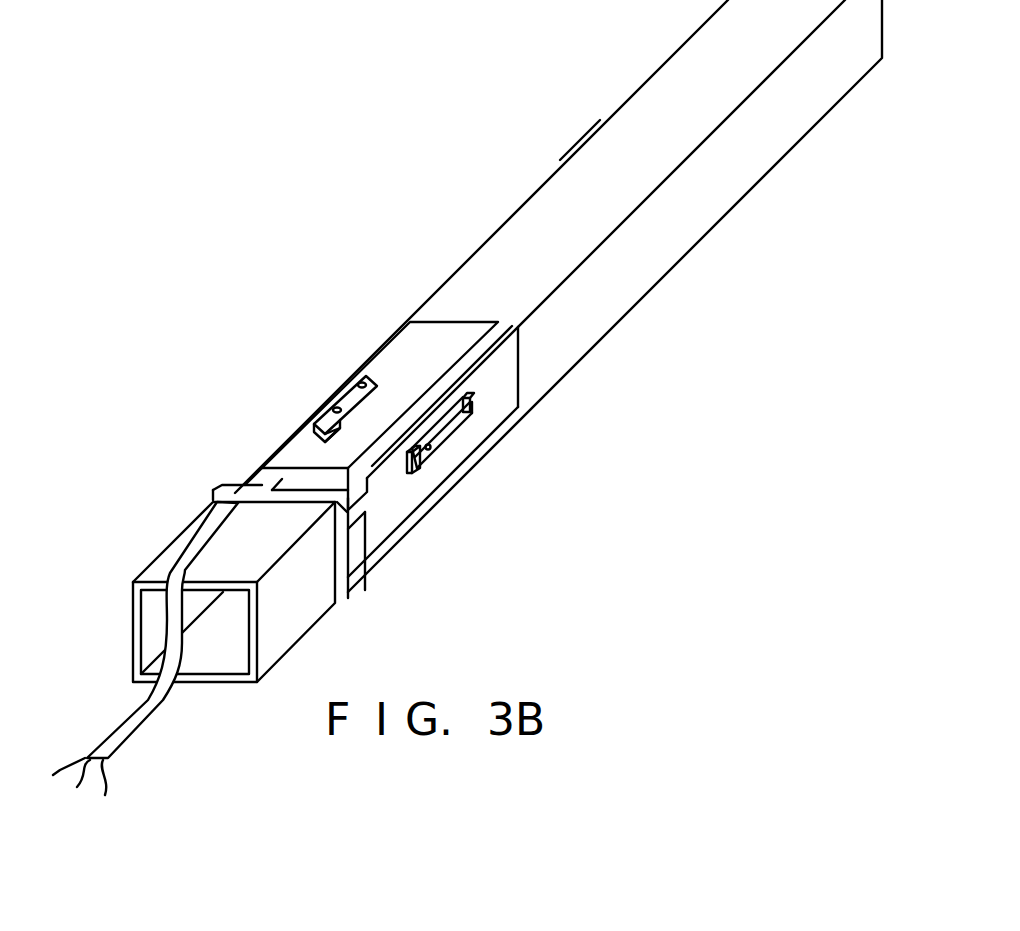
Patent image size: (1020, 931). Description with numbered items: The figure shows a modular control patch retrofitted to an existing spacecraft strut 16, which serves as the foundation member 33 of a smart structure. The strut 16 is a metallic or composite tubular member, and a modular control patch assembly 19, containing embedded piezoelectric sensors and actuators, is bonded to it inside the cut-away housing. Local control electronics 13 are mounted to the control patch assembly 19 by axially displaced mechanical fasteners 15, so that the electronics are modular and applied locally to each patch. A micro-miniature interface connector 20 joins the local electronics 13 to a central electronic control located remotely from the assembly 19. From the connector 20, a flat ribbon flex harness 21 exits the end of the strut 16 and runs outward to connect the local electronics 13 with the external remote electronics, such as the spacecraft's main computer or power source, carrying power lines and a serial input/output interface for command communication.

The spacecraft strut 16 is at (712, 63).
The foundation member 33 is at (497, 260).
The modular control patch assembly 19 is at (427, 338).
The control electronics 13 is at (455, 428).
The mechanical fastener 15 is at (472, 400).
The micro-miniature interface connector 20 is at (415, 472).
The flat ribbon flex harness 21 is at (340, 603).